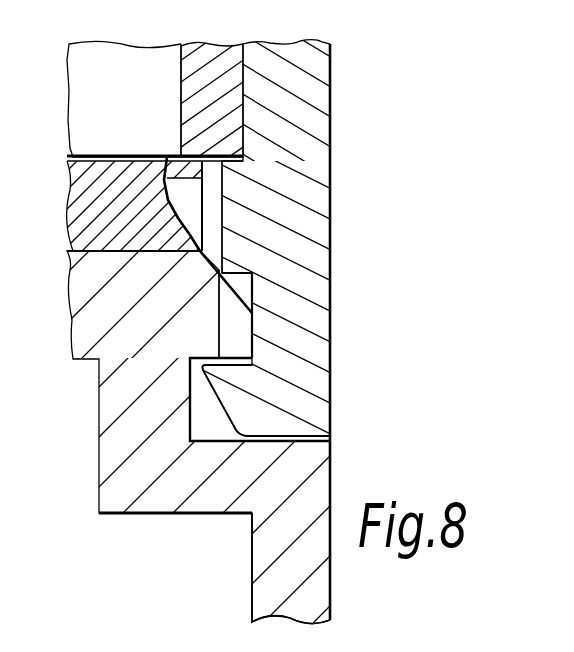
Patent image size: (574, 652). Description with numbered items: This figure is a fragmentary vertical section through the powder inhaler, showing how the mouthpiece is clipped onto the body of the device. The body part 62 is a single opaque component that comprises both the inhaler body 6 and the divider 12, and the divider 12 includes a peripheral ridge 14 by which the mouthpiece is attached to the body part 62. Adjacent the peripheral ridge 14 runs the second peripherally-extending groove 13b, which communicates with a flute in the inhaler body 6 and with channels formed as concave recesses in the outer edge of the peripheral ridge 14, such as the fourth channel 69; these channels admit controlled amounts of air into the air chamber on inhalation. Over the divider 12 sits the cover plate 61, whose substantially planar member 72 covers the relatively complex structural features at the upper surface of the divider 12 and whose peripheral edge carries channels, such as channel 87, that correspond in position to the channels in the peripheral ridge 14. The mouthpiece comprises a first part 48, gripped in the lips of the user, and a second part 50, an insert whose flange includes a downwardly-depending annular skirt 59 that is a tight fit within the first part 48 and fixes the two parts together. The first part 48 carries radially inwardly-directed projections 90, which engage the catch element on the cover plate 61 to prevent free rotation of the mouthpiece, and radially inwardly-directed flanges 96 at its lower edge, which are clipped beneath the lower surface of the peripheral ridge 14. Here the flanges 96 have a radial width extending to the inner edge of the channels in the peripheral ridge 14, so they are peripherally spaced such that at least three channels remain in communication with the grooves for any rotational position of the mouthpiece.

The inhaler body 6 is at (270, 547).
The divider 12 is at (100, 314).
The second peripherally-extending groove 13b is at (194, 410).
The peripheral ridge 14 is at (210, 309).
The first part of the mouthpiece 48 is at (290, 40).
The second part of the mouthpiece 50 is at (142, 60).
The annular skirt 59 is at (208, 43).
The cover plate 61 is at (93, 152).
The body part 62 is at (110, 521).
The fourth channel 69 is at (225, 342).
The planar member 72 is at (100, 206).
The fourth channel of the cover plate 87 is at (182, 185).
The radially inwardly-directed projections 90 is at (222, 193).
The radially inwardly-directed flanges 96 is at (220, 404).